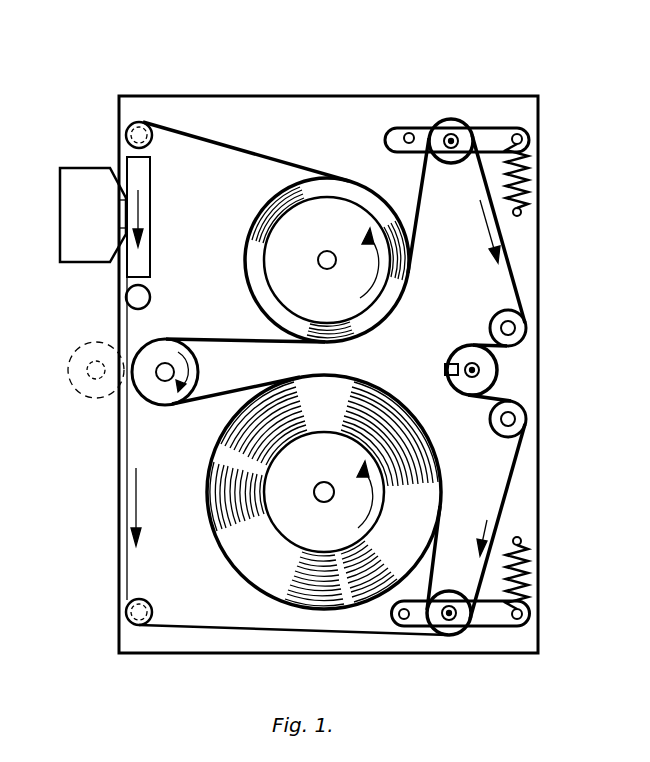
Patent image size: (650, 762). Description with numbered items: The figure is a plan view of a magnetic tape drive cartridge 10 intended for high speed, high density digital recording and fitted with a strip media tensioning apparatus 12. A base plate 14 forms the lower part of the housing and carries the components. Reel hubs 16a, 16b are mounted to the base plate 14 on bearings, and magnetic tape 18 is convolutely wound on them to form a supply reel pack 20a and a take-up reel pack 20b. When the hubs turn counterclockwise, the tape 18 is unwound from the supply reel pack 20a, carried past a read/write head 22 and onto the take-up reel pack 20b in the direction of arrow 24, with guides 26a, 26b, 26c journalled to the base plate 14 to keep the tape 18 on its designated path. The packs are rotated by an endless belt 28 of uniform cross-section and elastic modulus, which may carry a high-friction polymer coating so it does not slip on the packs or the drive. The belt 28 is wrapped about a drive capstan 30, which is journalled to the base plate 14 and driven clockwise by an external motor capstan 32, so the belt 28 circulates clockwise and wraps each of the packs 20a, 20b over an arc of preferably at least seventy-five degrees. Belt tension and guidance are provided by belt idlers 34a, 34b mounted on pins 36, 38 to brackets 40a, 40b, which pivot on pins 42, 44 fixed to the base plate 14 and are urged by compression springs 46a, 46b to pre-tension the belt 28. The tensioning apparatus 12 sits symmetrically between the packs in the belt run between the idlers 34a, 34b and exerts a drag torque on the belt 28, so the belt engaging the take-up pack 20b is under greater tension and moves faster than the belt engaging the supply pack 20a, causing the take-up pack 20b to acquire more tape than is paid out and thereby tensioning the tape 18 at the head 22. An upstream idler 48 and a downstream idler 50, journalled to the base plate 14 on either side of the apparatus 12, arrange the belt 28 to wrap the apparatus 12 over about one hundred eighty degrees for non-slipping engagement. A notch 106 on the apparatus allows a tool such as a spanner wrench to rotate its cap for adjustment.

The magnetic tape drive cartridge 10 is at (524, 76).
The strip media tensioning apparatus 12 is at (498, 370).
The base plate 14 is at (264, 118).
The reel hub 16a is at (348, 245).
The reel hub 16b is at (345, 477).
The magnetic tape 18 is at (258, 157).
The supply reel pack 20a is at (260, 233).
The take-up reel pack 20b is at (212, 456).
The read/write head 22 is at (75, 168).
The arrow 24 is at (137, 506).
The guide 26a is at (128, 130).
The guide 26b is at (151, 297).
The guide 26c is at (127, 610).
The endless belt 28 is at (418, 214).
The drive capstan 30 is at (166, 396).
The external motor capstan 32 is at (92, 348).
The belt idler 34a is at (449, 120).
The belt idler 34b is at (452, 638).
The pin 36 is at (456, 150).
The pin 38 is at (453, 598).
The bracket 40a is at (408, 128).
The bracket 40b is at (502, 628).
The pin 42 is at (403, 138).
The pin 44 is at (405, 624).
The compression spring 46a is at (530, 172).
The compression spring 46b is at (530, 578).
The upstream idler 48 is at (527, 328).
The downstream idler 50 is at (527, 418).
The notch 106 is at (446, 367).